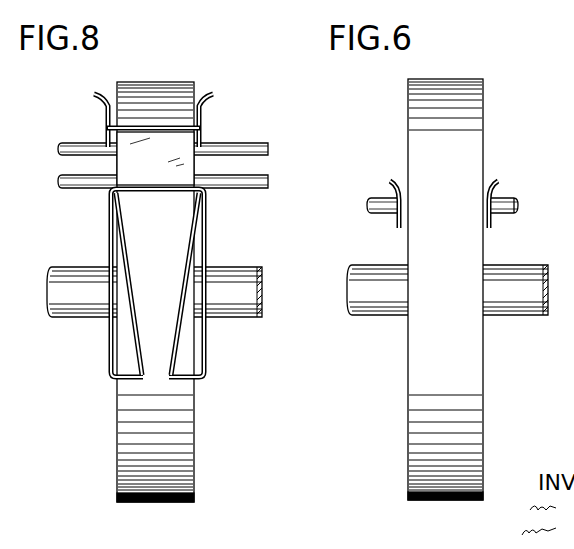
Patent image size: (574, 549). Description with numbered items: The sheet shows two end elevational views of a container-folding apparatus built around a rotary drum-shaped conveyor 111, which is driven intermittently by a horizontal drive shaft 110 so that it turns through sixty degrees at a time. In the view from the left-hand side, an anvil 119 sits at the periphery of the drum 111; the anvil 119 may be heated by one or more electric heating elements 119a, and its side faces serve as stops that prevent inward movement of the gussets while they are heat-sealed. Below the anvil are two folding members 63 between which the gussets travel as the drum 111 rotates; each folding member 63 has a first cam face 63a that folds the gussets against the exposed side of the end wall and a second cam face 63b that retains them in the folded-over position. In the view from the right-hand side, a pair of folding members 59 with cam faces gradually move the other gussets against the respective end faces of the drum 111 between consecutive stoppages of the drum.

In FIG. 8, the horizontal drive shaft 110 is at (230, 309).
In FIG. 6, the horizontal drive shaft 110 is at (516, 306).
In FIG. 8, the rotary drum-shaped conveyor 111 is at (130, 432).
In FIG. 6, the rotary drum-shaped conveyor 111 is at (472, 128).
In FIG. 8, the anvil 119 is at (128, 160).
In FIG. 8, the electric heating elements 119a is at (232, 181).
In FIG. 8, the folding members 63 is at (109, 258).
In FIG. 8, the first cam face 63a is at (116, 257).
In FIG. 8, the second cam face 63b is at (169, 353).
In FIG. 6, the folding members 59 is at (393, 187).